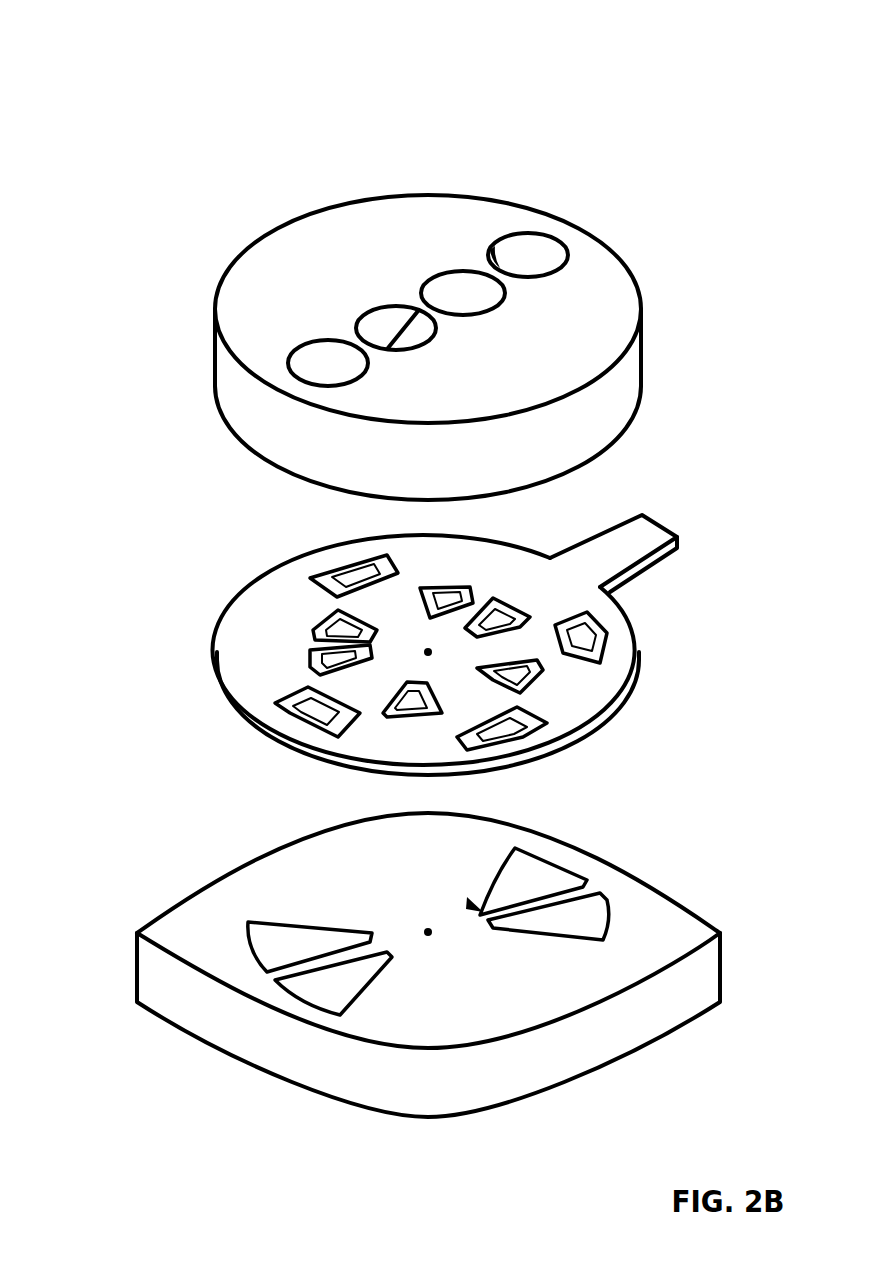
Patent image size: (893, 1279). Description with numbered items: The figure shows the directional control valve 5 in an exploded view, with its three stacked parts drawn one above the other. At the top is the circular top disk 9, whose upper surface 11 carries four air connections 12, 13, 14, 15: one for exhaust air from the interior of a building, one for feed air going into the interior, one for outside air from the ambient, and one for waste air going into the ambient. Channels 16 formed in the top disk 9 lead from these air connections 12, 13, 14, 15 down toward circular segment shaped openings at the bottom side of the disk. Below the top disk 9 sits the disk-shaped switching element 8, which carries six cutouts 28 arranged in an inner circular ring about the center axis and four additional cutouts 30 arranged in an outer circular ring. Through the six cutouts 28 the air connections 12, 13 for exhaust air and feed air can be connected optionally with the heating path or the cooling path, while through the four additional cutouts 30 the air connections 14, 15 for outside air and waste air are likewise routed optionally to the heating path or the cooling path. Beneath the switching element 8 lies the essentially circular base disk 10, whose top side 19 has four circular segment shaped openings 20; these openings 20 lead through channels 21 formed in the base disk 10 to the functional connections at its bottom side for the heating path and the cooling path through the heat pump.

The directional control valve 5 is at (703, 142).
The switching element 8 is at (215, 653).
The top disk 9 is at (215, 347).
The base disk 10 is at (157, 977).
The top surface of cover disc 11 is at (457, 220).
The air connection 12 is at (420, 328).
The air connection 13 is at (440, 285).
The air connection 14 is at (340, 373).
The air connection 15 is at (550, 247).
The channels 16 is at (439, 265).
The top side 19 is at (282, 877).
The circular segment shaped openings 20 is at (335, 947).
The channels 21 is at (429, 937).
The cutouts 28 is at (312, 617).
The additional cutouts 30 is at (333, 577).